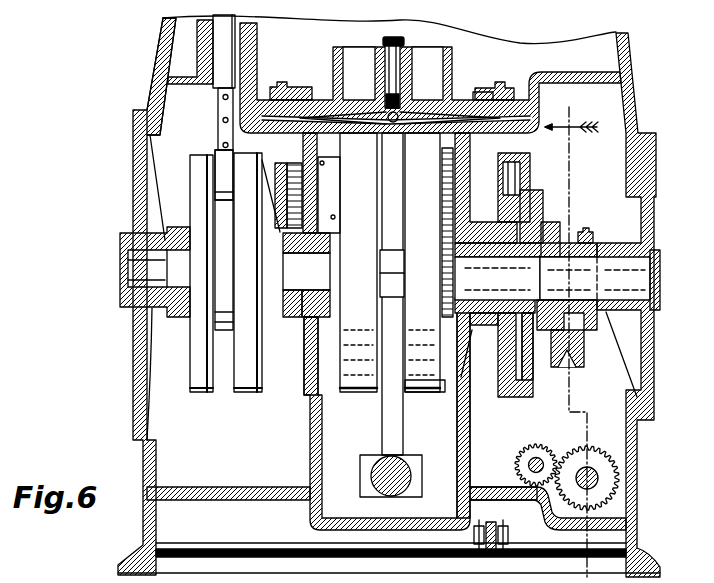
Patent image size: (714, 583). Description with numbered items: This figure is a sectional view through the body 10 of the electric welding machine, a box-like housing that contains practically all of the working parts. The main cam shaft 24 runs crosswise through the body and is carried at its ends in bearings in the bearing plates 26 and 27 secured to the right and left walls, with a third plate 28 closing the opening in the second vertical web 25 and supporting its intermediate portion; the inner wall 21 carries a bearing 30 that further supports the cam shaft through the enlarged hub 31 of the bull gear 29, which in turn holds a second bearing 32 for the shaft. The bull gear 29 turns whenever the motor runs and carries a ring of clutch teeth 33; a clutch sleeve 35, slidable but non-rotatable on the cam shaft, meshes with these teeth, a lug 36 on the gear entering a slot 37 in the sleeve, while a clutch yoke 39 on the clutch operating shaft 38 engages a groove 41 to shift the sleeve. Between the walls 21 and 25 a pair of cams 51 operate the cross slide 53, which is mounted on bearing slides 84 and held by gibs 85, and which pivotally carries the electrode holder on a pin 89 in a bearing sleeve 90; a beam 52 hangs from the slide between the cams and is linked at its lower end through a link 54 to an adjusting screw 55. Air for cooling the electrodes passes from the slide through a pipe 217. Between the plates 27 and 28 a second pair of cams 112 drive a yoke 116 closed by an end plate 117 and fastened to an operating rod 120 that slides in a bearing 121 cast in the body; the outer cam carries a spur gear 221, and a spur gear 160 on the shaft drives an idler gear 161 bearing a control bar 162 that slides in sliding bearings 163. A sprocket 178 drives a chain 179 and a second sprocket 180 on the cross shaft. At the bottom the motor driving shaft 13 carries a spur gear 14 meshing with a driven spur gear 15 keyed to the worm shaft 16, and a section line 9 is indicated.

The section line 9 is at (571, 339).
The body portion 10 is at (143, 452).
The motor driving shaft 13 is at (524, 460).
The spur gear 14 is at (536, 457).
The driven spur gear 15 is at (591, 458).
The worm shaft 16 is at (599, 480).
The inner wall 21 is at (461, 400).
The main cam shaft 24 is at (306, 275).
The second vertical web 25 is at (310, 447).
The bearing plate 26 is at (654, 387).
The bearing plate 27 is at (133, 392).
The third plate 28 is at (302, 395).
The bull gear 29 is at (510, 393).
The bearing 30 is at (497, 355).
The enlarged hub 31 is at (495, 292).
The second bearing 32 is at (470, 290).
The clutch teeth 33 is at (523, 350).
The clutch sleeve 35 is at (560, 227).
The lug 36 is at (538, 208).
The slot 37 is at (553, 207).
The clutch operating shaft 38 is at (584, 357).
The clutch yoke 39 is at (584, 326).
The groove 41 is at (578, 232).
The cams 51 is at (390, 262).
The beam 52 is at (383, 418).
The cross slide 53 is at (340, 96).
The link 54 is at (367, 468).
The adjusting screw 55 is at (390, 494).
The bearing slides 84 is at (453, 98).
The gibs 85 is at (303, 97).
The pin 89 is at (395, 40).
The bearing sleeve 90 is at (399, 98).
The cams 112 is at (198, 393).
The yoke 116 is at (222, 208).
The end plate 117 is at (222, 332).
The operating rod 120 is at (217, 80).
The bearing 121 is at (197, 51).
The spur gear 160 is at (299, 318).
The idler gear 161 is at (323, 165).
The control bar 162 is at (289, 185).
The sliding bearings 163 is at (227, 150).
The sprocket 178 is at (448, 395).
The chain 179 is at (470, 184).
The second sprocket 180 is at (447, 152).
The pipe 217 is at (398, 108).
The spur gear 221 is at (145, 237).